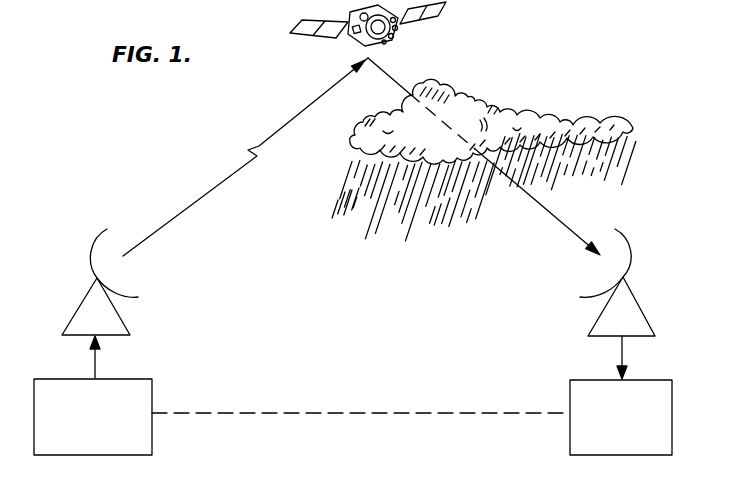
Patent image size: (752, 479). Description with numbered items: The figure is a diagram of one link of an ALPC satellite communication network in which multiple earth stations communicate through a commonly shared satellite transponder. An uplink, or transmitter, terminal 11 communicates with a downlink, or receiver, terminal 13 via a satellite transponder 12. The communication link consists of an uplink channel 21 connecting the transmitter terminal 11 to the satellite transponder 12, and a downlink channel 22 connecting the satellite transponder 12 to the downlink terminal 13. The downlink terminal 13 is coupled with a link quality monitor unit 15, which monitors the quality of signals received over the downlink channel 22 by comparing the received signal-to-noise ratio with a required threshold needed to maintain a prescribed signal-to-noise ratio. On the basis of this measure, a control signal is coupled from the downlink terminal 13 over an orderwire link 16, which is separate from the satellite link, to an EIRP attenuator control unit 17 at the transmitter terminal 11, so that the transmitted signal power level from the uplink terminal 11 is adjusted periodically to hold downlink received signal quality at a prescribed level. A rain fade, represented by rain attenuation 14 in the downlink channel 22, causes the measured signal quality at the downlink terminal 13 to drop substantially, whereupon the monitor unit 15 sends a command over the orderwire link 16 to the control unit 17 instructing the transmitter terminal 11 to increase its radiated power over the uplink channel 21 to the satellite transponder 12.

The uplink terminal 11 is at (128, 296).
The satellite transponder 12 is at (348, 12).
The downlink terminal 13 is at (627, 256).
The rain attenuation 14 is at (446, 84).
The link quality monitor unit 15 is at (570, 392).
The orderwire link 16 is at (372, 413).
The EIRP attenuator control unit 17 is at (152, 388).
The uplink channel 21 is at (232, 173).
The downlink channel 22 is at (554, 216).